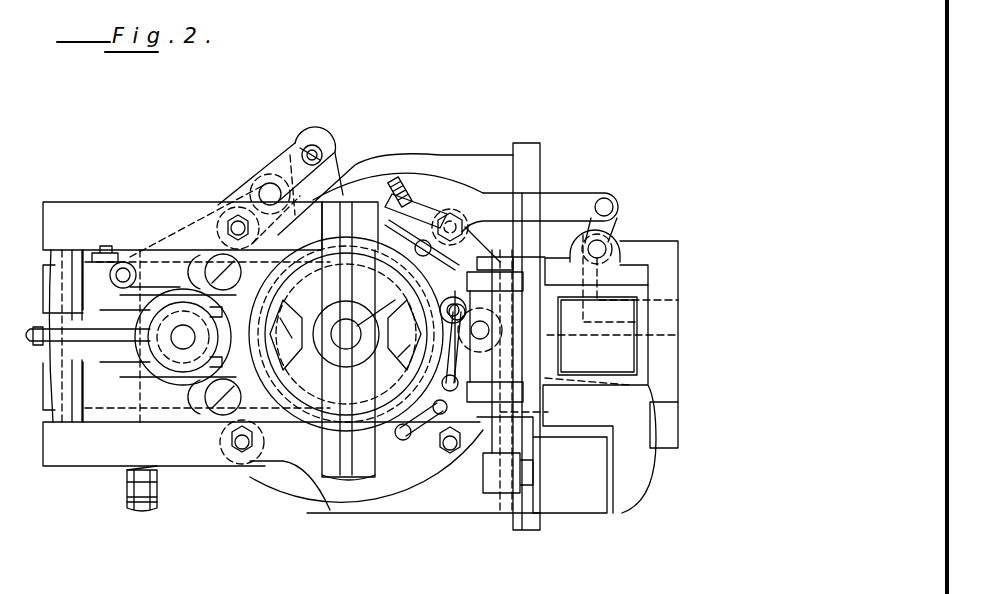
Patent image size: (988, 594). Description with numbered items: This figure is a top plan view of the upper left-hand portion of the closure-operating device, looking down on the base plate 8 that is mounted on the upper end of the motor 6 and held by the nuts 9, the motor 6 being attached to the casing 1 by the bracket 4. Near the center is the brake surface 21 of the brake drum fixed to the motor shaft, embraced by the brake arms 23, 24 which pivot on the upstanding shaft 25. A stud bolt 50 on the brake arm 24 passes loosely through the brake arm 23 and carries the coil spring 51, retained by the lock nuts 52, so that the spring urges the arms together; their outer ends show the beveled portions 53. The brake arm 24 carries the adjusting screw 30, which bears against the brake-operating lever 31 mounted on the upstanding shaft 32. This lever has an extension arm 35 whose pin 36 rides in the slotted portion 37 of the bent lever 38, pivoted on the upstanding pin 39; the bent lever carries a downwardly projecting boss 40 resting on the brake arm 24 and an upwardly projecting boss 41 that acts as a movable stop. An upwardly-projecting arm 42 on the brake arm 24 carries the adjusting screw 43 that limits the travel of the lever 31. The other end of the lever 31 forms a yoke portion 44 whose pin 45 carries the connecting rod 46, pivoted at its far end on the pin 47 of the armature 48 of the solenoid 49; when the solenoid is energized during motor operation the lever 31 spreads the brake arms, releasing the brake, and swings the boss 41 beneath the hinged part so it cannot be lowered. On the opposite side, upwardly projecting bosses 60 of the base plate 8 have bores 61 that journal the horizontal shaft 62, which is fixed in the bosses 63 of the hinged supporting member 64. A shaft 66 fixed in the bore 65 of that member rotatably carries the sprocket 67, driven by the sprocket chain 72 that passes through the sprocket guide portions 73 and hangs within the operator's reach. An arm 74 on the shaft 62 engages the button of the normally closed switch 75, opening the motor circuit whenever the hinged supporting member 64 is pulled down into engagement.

The casing 1 is at (677, 424).
The bracket 4 is at (521, 528).
The motor 6 is at (293, 500).
The base plate 8 is at (372, 487).
The nuts 9 is at (228, 443).
The brake surface 21 is at (346, 334).
The brake arm 23 is at (413, 447).
The brake arm 24 is at (372, 200).
The upstanding shaft 25 is at (475, 325).
The adjusting screw 30 is at (108, 256).
The brake-operating lever 31 is at (286, 335).
The upstanding shaft 32 is at (176, 343).
The extension arm 35 is at (332, 177).
The pin 36 is at (322, 152).
The slotted portion 37 is at (306, 137).
The bent lever 38 is at (291, 153).
The upstanding pin 39 is at (263, 185).
The downwardly projecting boss 40 is at (198, 258).
The upwardly projecting boss 41 is at (116, 276).
The upwardly-projecting arm 42 is at (435, 205).
The adjusting screw 43 is at (404, 184).
The yoke portion 44 is at (584, 206).
The pin 45 is at (614, 209).
The connecting rod 46 is at (611, 241).
The pin 47 is at (610, 252).
The armature 48 is at (608, 279).
The solenoid 49 is at (633, 356).
The stud bolt 50 is at (140, 504).
The coil spring 51 is at (158, 474).
The lock nuts 52 is at (158, 503).
The beveled portions 53 is at (45, 362).
The upwardly projecting bosses 60 is at (436, 252).
The bores 61 is at (511, 264).
The horizontal shaft 62 is at (508, 445).
The bosses 63 is at (522, 283).
The hinged supporting member 64 is at (327, 472).
The bore 65 is at (381, 307).
The shaft 66 is at (350, 333).
The sprocket 67 is at (405, 335).
The sprocket chain 72 is at (425, 385).
The sprocket guide portions 73 is at (102, 212).
The arm 74 is at (483, 470).
The switch 75 is at (585, 505).